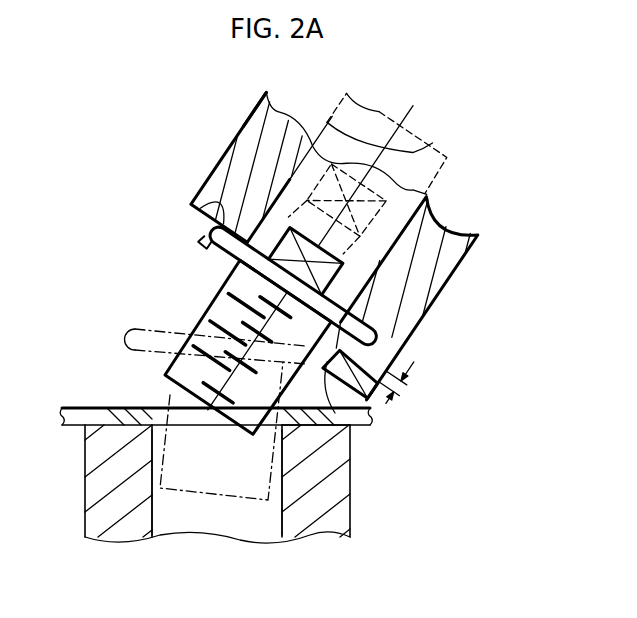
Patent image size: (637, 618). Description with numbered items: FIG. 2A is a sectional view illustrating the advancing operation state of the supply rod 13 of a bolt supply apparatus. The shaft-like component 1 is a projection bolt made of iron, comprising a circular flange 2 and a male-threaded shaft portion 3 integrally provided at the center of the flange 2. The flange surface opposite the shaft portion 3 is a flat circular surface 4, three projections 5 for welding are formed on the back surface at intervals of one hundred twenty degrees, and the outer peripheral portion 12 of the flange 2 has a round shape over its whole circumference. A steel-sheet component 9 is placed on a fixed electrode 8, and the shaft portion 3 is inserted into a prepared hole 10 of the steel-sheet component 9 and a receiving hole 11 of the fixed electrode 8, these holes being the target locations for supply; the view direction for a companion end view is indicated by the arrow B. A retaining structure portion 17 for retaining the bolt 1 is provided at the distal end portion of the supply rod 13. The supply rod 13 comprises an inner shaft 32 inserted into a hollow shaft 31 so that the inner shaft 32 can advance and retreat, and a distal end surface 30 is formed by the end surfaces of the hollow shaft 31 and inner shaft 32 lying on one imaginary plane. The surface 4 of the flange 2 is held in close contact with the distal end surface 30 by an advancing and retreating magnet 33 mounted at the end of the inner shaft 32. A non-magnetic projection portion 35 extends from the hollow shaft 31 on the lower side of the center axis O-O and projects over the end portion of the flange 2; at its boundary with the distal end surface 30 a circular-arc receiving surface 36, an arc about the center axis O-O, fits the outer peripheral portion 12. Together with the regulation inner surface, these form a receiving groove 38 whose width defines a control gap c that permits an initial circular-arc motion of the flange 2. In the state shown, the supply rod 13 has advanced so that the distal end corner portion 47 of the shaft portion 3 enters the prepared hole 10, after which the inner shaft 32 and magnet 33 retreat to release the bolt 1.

The arrow B is at (110, 545).
The fixed electrode 8 is at (85, 492).
The steel-sheet component 9 is at (82, 406).
The prepared hole 10 is at (183, 418).
The receiving hole 11 is at (270, 538).
The projection portion 35 is at (342, 426).
The retaining structure portion 17 is at (197, 288).
The shaft-like component 1 is at (185, 320).
The distal end surface 30 is at (240, 263).
The outer peripheral portion 12 is at (207, 231).
The projection for welding 5 is at (200, 242).
The magnet 33 is at (260, 222).
The shaft portion 3 is at (177, 352).
The distal end corner portion 47 is at (252, 440).
The center axis O-O is at (413, 152).
The supply rod 13 is at (213, 143).
The hollow shaft 31 is at (252, 108).
The circular flange 2 is at (203, 191).
The inner shaft 32 is at (303, 143).
The surface 4 is at (360, 303).
The receiving groove 38 is at (367, 323).
The circular-arc receiving surface 36 is at (390, 343).
The control gap c is at (396, 381).